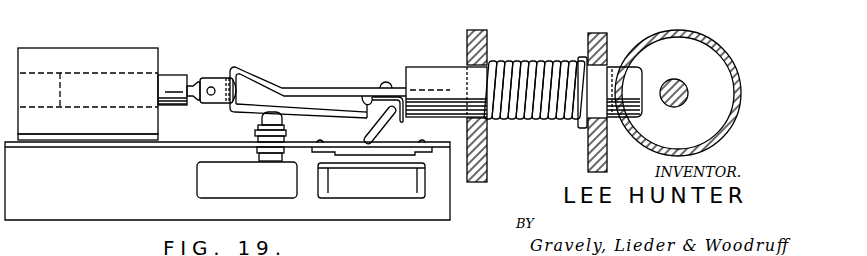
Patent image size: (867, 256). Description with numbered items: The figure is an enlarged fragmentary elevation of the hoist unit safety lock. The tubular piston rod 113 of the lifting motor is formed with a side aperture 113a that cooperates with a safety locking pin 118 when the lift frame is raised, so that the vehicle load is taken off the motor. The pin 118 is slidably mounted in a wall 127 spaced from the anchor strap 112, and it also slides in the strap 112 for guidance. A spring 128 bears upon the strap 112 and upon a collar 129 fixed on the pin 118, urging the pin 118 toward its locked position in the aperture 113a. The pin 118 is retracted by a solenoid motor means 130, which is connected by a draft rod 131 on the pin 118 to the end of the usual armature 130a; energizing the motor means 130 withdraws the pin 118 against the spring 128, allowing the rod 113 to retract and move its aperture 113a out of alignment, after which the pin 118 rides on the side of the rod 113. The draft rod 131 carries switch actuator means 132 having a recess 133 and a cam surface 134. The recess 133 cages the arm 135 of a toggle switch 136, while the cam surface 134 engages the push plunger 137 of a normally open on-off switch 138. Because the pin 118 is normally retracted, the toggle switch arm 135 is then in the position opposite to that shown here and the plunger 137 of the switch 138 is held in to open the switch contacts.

The anchor strap 112 is at (487, 62).
The rod 113 is at (680, 28).
The side aperture 113a is at (628, 50).
The safety locking pin 118 is at (630, 82).
The wall 127 is at (593, 160).
The spring 128 is at (507, 62).
The collar 129 is at (585, 126).
The solenoid motor means 130 is at (52, 48).
The armature 130a is at (170, 75).
The draft rod 131 is at (314, 72).
The switch actuator means 132 is at (298, 110).
The recess 133 is at (362, 96).
The cam surface 134 is at (247, 113).
The arm 135 is at (400, 129).
The toggle switch 136 is at (353, 188).
The push plunger 137 is at (282, 118).
The on-off switch 138 is at (208, 180).